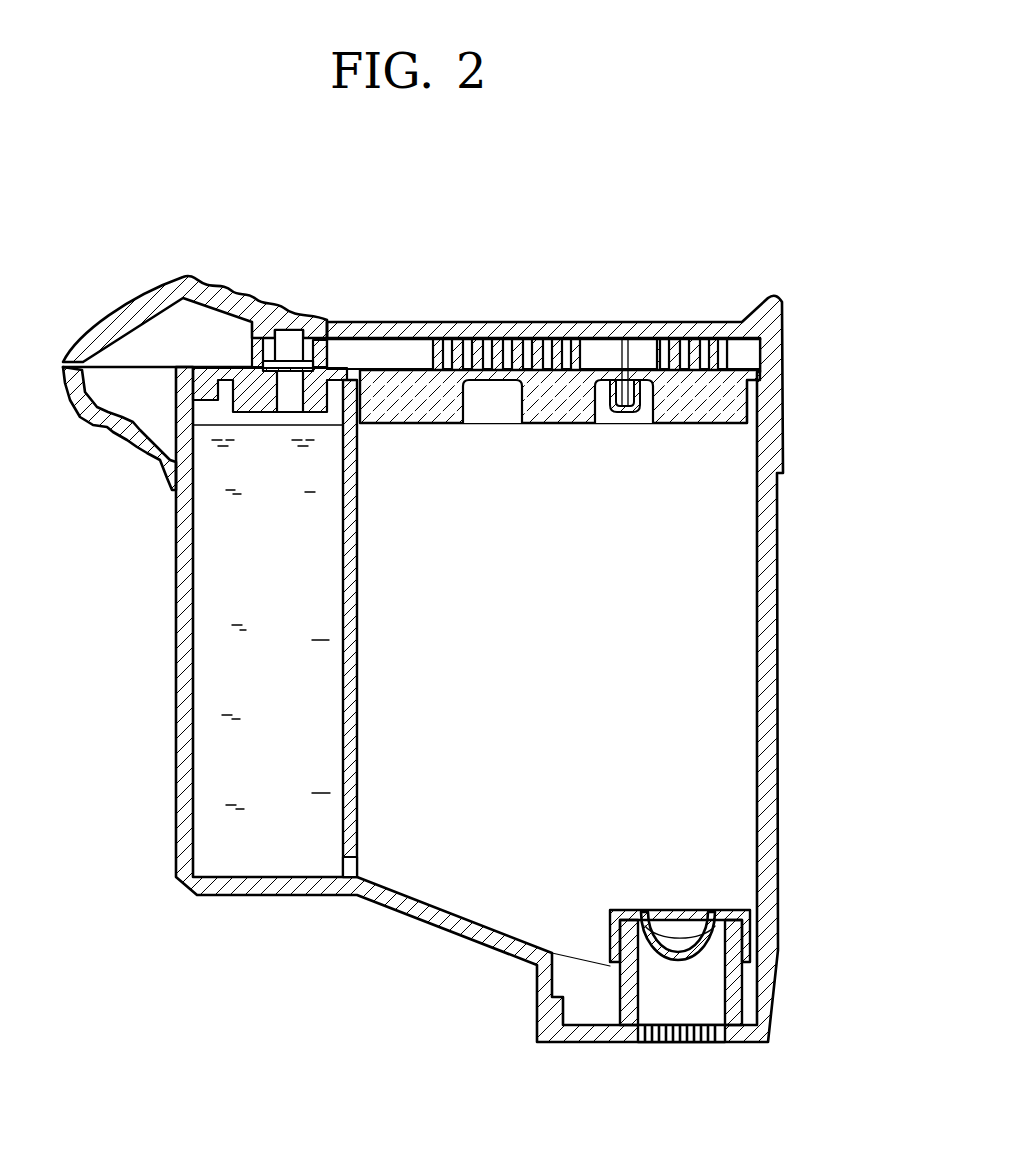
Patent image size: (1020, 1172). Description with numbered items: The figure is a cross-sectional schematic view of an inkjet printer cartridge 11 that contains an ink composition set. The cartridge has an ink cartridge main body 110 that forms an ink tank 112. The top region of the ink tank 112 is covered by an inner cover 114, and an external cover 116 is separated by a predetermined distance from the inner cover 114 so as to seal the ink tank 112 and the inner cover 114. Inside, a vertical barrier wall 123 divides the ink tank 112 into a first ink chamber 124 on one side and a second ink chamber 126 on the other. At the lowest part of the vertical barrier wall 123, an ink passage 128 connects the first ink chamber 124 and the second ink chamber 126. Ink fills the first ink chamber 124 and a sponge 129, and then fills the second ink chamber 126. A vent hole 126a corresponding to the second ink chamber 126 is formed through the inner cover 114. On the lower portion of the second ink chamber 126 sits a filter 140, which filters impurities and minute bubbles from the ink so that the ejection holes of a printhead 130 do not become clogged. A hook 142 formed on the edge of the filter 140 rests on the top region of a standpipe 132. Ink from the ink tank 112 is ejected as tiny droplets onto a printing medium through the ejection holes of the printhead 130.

The inkjet printer cartridge 11 is at (107, 272).
The ink cartridge main body 110 is at (545, 669).
The ink tank 112 is at (781, 722).
The inner cover 114 is at (753, 403).
The external cover 116 is at (688, 326).
The vertical barrier wall 123 is at (348, 672).
The first ink chamber 124 is at (224, 767).
The second ink chamber 126 is at (607, 608).
The vent hole 126a is at (625, 338).
The ink passage 128 is at (344, 868).
The sponge 129 is at (734, 585).
The printhead 130 is at (665, 1046).
The standpipe 132 is at (731, 1045).
The filter 140 is at (696, 938).
The hook 142 is at (746, 952).